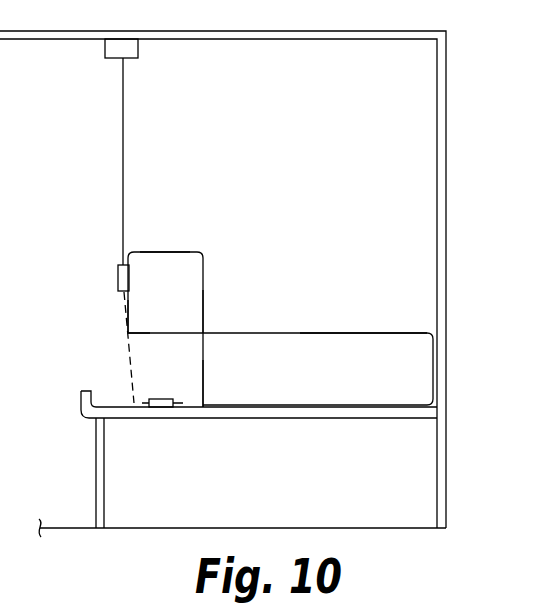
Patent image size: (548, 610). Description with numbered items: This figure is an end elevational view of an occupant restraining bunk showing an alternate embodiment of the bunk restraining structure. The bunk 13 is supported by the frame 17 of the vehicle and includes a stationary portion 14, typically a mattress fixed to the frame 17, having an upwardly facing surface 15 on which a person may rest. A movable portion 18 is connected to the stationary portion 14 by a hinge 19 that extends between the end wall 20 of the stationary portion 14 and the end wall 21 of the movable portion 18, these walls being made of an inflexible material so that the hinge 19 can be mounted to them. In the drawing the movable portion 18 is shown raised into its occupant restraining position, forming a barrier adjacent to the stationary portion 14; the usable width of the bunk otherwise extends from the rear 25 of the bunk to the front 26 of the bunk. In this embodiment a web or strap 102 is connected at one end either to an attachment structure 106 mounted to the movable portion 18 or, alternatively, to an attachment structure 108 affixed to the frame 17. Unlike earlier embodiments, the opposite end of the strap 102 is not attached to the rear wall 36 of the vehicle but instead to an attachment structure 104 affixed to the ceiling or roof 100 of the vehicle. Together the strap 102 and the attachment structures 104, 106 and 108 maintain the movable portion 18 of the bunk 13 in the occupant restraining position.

The bunk 13 is at (283, 318).
The stationary portion 14 is at (327, 373).
The upwardly facing surface 15 is at (397, 333).
The frame 17 is at (133, 418).
The movable portion 18 is at (190, 278).
The hinge 19 is at (200, 318).
The end wall 20 is at (201, 388).
The end wall 21 is at (140, 333).
The rear 25 is at (437, 365).
The front 26 is at (158, 252).
The rear wall 36 is at (447, 210).
The ceiling or roof 100 is at (302, 40).
The web or strap 102 is at (123, 140).
The attachment structure 104 is at (138, 51).
The attachment structure 106 is at (118, 275).
The attachment structure 108 is at (182, 404).